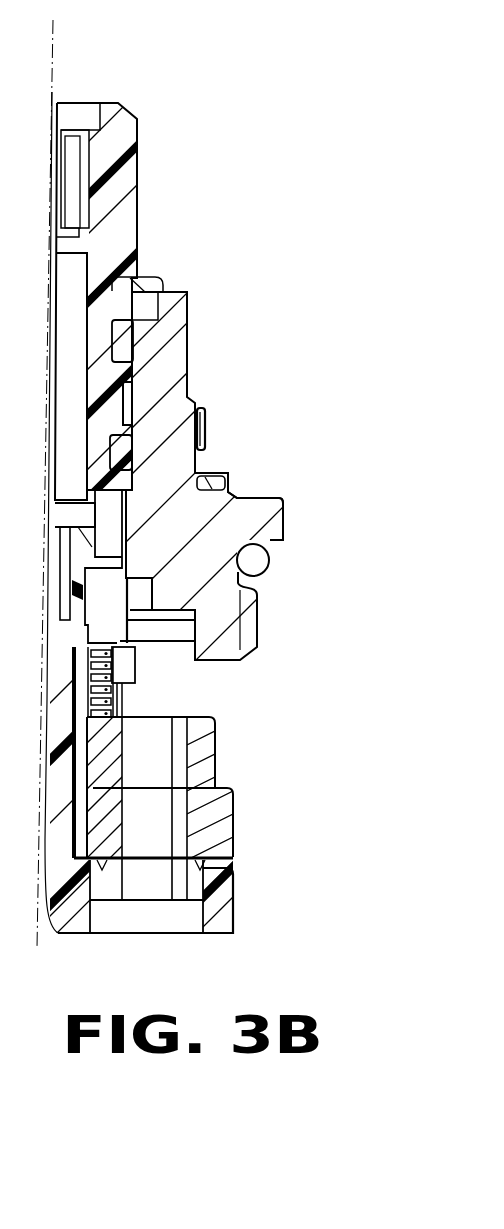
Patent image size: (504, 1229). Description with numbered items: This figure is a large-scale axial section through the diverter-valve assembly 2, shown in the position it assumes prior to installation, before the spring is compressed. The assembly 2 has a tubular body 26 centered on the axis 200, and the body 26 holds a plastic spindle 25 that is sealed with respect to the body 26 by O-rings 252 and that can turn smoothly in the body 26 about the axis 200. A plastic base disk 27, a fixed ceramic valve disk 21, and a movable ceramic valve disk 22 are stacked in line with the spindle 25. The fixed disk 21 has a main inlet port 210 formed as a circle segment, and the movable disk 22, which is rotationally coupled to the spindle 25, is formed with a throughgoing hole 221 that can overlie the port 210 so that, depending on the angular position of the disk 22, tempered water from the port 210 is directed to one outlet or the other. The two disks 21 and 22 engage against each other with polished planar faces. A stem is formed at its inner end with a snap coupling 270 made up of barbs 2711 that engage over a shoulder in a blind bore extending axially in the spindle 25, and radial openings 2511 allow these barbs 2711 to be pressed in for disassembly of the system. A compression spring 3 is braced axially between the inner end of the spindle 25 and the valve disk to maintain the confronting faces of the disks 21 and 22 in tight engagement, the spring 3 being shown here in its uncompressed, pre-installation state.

The axis 200 is at (53, 42).
The diverter-valve assembly 2 is at (256, 329).
The plastic spindle 25 is at (108, 412).
The O-rings 252 is at (123, 338).
The snap coupling 270 is at (215, 489).
The radial openings 2511 is at (63, 513).
The tubular body 26 is at (279, 540).
The barbs 2711 is at (130, 557).
The compression spring 3 is at (130, 706).
The hole 221 is at (157, 742).
The movable ceramic valve disk 22 is at (200, 767).
The fixed ceramic valve disk 21 is at (220, 823).
The main inlet port 210 is at (237, 850).
The plastic base disk 27 is at (220, 910).